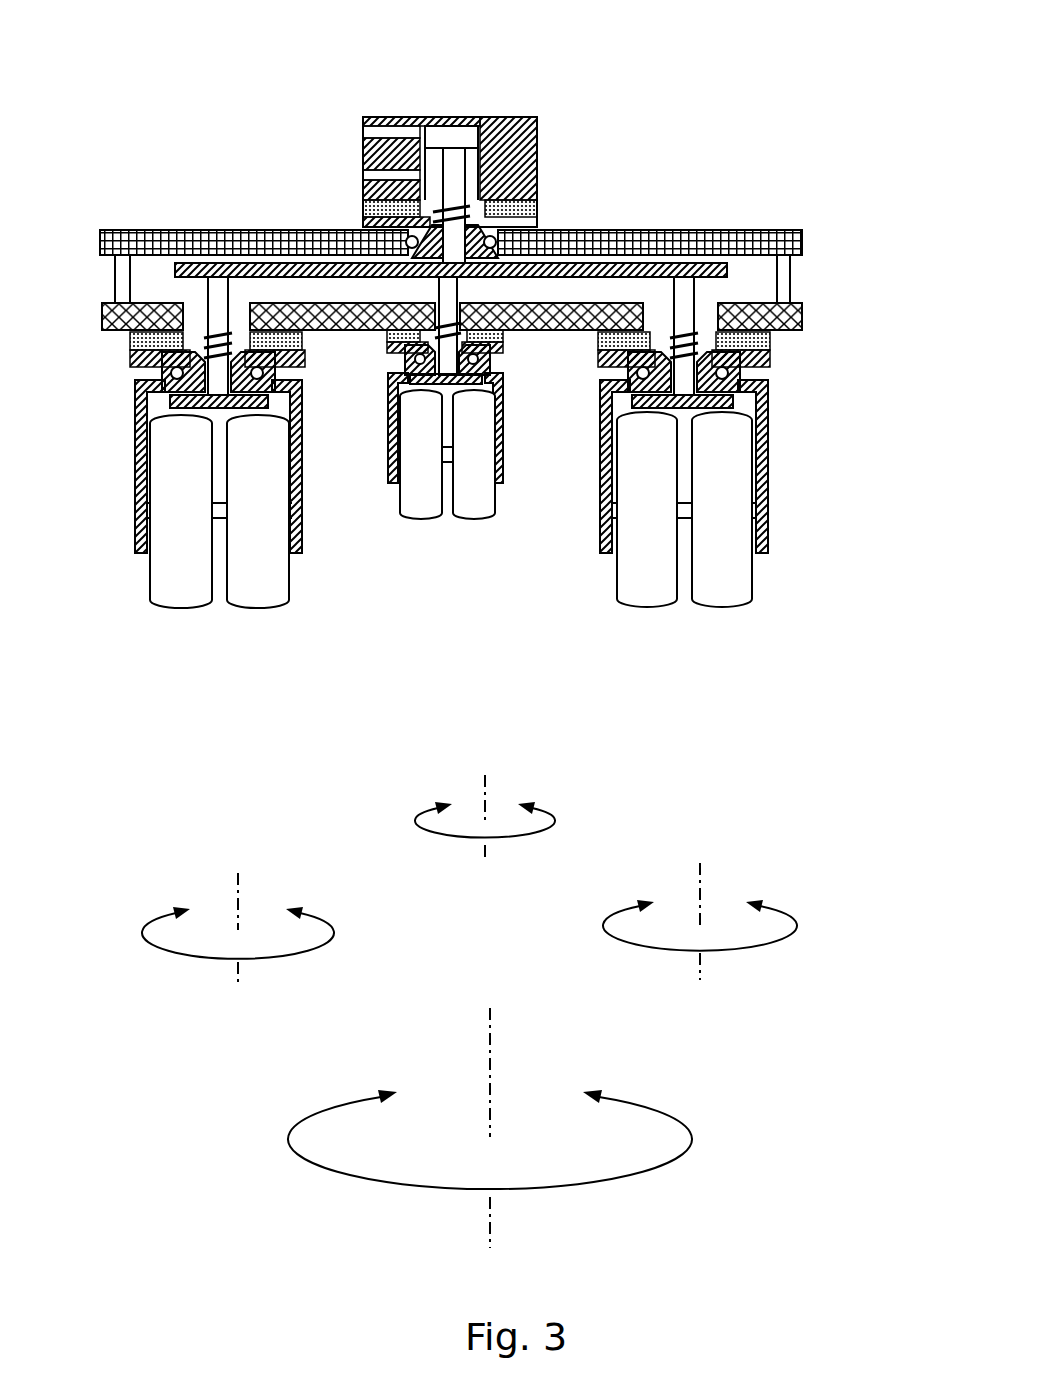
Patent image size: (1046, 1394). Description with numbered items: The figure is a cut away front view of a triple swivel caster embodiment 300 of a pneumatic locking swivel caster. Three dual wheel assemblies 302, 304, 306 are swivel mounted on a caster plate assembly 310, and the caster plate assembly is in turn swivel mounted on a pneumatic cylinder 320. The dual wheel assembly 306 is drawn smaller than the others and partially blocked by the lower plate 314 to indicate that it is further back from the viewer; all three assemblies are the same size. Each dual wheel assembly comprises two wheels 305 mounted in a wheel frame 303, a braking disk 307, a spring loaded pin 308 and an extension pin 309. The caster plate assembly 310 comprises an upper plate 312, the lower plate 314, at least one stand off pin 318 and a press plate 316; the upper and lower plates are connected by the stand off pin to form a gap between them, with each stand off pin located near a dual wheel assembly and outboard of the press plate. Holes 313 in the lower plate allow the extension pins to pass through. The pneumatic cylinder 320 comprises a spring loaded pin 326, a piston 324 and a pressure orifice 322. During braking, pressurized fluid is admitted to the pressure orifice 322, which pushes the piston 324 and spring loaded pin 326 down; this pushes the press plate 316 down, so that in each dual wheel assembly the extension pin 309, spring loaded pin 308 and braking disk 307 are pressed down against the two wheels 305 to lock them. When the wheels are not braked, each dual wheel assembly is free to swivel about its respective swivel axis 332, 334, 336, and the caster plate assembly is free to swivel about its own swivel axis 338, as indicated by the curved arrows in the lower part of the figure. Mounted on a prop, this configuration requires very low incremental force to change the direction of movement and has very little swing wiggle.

The triple swivel caster embodiment 300 is at (465, 333).
The dual wheel assembly 302 is at (179, 466).
The wheel frame 303 is at (135, 466).
The dual wheel assembly 304 is at (738, 466).
The wheels 305 is at (158, 576).
The dual wheel assembly 306 is at (445, 421).
The braking disk 307 is at (172, 401).
The spring loaded pin 308 is at (210, 364).
The extension pin 309 is at (210, 323).
The caster plate assembly 310 is at (650, 216).
The upper plate 312 is at (808, 243).
The holes 313 is at (718, 319).
The lower plate 314 is at (808, 319).
The press plate 316 is at (733, 270).
The stand off pin 318 is at (796, 293).
The pneumatic cylinder 320 is at (443, 115).
The pressure orifice 322 is at (362, 133).
The piston 324 is at (432, 165).
The spring loaded pin 326 is at (432, 210).
The swivel axis 332 is at (238, 953).
The swivel axis 334 is at (700, 945).
The swivel axis 336 is at (485, 838).
The swivel axis 338 is at (490, 1147).